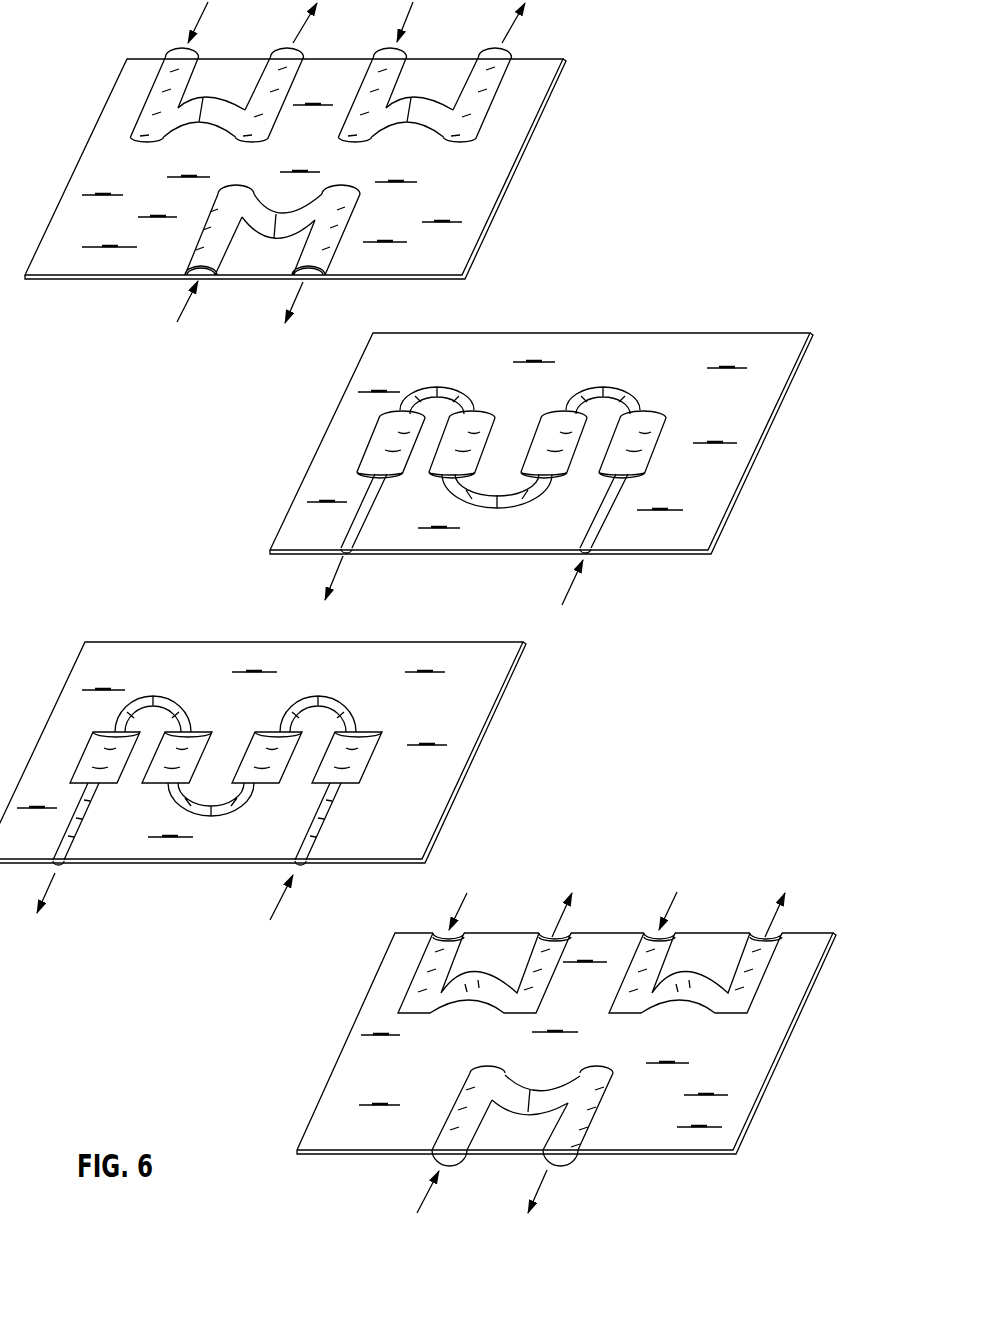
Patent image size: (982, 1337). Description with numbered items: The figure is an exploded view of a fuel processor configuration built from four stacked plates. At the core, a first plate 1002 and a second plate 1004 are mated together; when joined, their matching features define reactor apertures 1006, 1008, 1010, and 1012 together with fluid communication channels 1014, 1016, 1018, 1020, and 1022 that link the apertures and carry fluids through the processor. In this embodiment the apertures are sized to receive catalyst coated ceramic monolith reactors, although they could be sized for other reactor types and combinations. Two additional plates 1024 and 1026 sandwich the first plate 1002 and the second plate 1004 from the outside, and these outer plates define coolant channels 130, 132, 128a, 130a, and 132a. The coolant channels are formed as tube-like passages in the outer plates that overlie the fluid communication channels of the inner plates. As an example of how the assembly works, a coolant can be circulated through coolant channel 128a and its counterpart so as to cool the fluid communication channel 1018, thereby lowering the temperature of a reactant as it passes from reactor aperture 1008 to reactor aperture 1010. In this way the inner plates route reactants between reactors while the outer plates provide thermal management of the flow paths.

The first plate 1002 is at (778, 405).
The second plate 1004 is at (462, 752).
The reactor aperture 1006 is at (655, 447).
The reactor aperture 1008 is at (547, 476).
The reactor aperture 1010 is at (493, 420).
The reactor aperture 1012 is at (390, 417).
The fluid communication channel 1014 is at (325, 823).
The fluid communication channel 1016 is at (342, 700).
The fluid communication channel 1018 is at (208, 817).
The fluid communication channel 1020 is at (188, 710).
The fluid communication channel 1022 is at (82, 827).
The additional plate 1024 is at (533, 132).
The additional plate 1026 is at (780, 1057).
The coolant channel 130 is at (363, 138).
The coolant channel 132 is at (155, 138).
The coolant channel 128a is at (598, 1092).
The coolant channel 130a is at (626, 1013).
The coolant channel 132a is at (418, 1013).